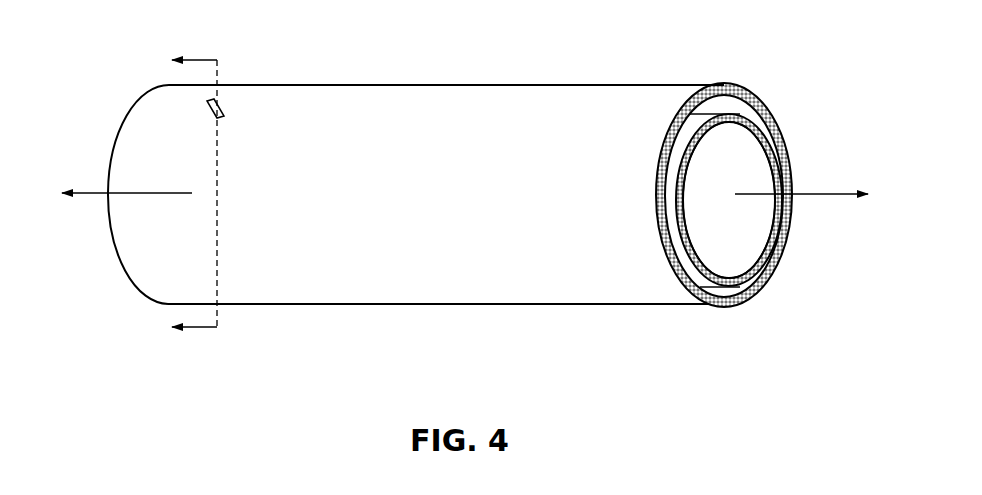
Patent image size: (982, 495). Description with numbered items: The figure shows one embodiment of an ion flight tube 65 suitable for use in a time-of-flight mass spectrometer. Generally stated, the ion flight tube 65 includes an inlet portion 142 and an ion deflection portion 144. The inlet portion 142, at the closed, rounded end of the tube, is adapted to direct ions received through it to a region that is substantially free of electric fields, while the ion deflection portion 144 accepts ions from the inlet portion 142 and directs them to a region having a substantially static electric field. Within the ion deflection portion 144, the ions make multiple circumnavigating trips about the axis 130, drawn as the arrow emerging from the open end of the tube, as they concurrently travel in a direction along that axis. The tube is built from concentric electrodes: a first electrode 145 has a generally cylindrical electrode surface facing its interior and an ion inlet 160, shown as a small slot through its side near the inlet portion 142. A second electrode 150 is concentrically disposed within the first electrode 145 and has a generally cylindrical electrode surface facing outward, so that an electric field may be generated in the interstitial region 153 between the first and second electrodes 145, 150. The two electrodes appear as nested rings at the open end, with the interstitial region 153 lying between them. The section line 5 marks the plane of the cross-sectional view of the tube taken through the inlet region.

The section line 5- 5 is at (183, 197).
The ion flight tube 65 is at (542, 317).
The axis 130 is at (808, 197).
The inlet portion 142 is at (143, 160).
The ion deflection portion 144 is at (470, 105).
The first electrode 145 is at (722, 84).
The second electrode 150 is at (763, 131).
The interstitial region 153 is at (755, 118).
The ion inlet 160 is at (219, 99).